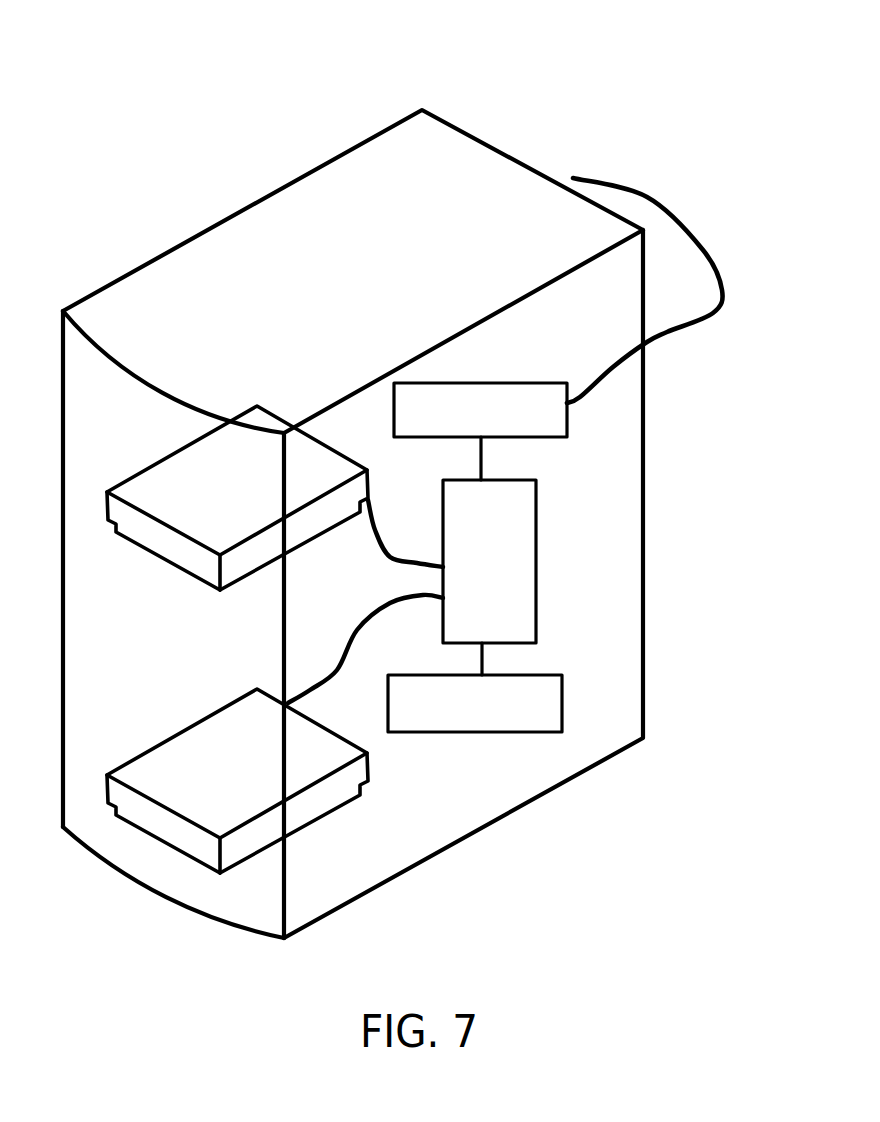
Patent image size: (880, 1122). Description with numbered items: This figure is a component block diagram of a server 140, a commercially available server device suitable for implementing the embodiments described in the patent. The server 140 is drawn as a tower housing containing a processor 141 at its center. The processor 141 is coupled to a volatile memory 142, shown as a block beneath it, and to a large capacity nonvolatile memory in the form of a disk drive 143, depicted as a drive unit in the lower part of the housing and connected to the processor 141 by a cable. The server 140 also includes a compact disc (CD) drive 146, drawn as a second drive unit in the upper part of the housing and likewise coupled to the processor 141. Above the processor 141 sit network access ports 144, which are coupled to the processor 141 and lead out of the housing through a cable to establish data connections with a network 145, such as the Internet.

The server 140 is at (385, 128).
The processor 141 is at (466, 576).
The volatile memory 142 is at (452, 716).
The disk drive 143 is at (368, 768).
The network access ports 144 is at (458, 424).
The network 145 is at (662, 335).
The compact disc (CD) drive 146 is at (307, 542).